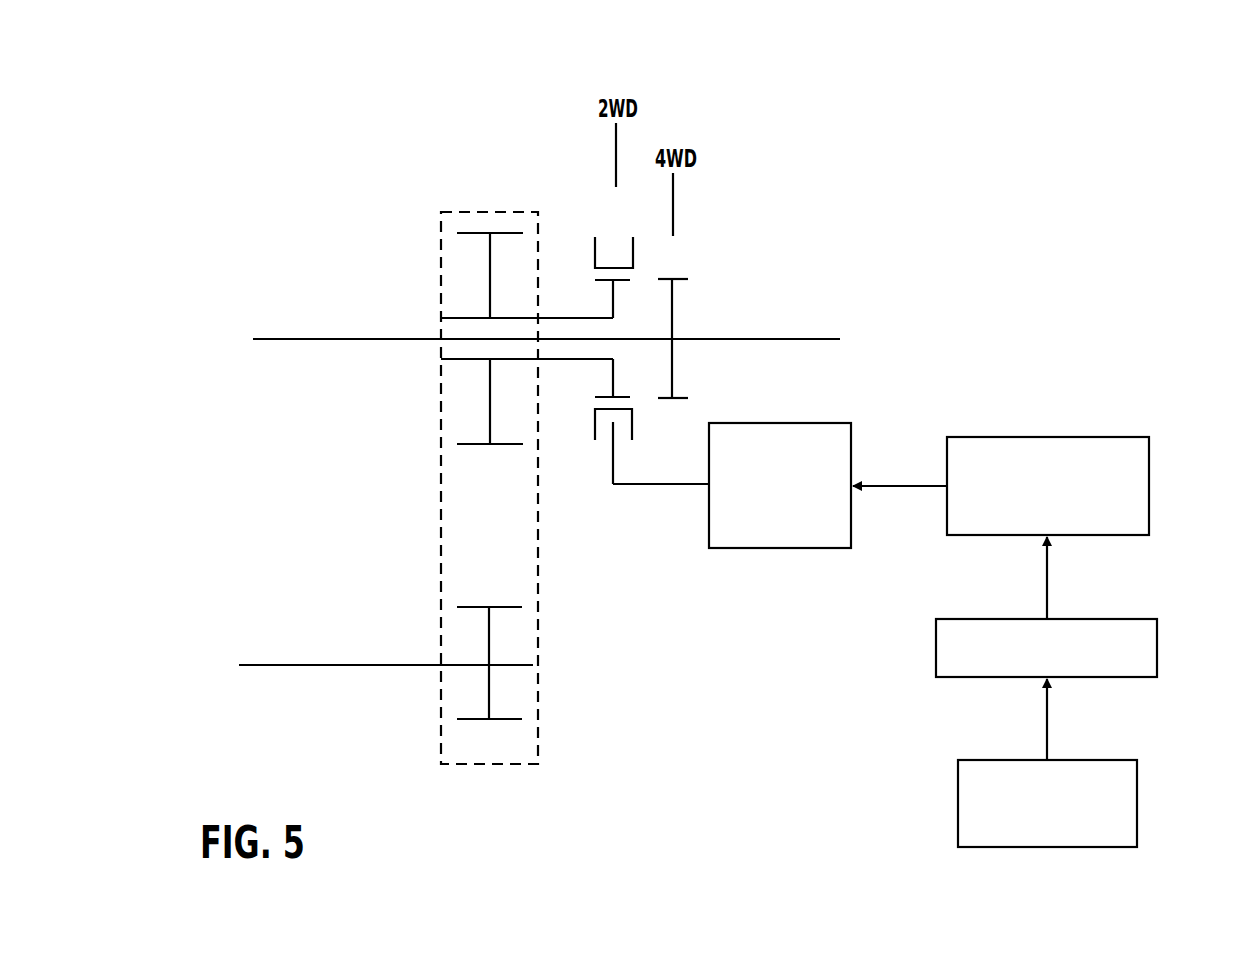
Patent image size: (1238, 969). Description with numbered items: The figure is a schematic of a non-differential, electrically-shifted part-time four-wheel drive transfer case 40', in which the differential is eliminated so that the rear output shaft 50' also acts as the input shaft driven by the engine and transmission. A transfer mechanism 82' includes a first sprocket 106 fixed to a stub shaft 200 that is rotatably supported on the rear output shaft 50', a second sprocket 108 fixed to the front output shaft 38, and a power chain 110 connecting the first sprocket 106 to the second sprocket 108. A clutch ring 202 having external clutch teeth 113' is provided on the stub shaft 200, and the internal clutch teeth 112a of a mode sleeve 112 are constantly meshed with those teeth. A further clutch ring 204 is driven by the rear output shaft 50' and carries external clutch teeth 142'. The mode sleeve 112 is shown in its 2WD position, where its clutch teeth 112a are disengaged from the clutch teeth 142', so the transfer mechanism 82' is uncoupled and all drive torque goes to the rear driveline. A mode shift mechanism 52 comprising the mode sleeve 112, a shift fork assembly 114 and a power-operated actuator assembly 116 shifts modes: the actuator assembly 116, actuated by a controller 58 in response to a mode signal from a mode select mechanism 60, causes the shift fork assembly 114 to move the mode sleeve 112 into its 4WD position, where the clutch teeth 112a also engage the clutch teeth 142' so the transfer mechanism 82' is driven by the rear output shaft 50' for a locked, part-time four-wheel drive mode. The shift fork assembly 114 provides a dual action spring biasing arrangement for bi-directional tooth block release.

The transfer case 40' is at (761, 48).
The power chain 110 is at (455, 548).
The first sprocket 106 is at (468, 232).
The stub shaft 200 is at (460, 317).
The clutch ring 202 is at (613, 296).
The external clutch teeth 113' is at (596, 295).
The mode sleeve 112 is at (594, 251).
The internal clutch teeth 112a is at (602, 401).
The clutch ring 204 is at (677, 308).
The external clutch teeth 142' is at (704, 259).
The rear output shaft 50' is at (546, 301).
The front output shaft 38 is at (291, 663).
The second sprocket 108 is at (465, 722).
The transfer mechanism 82' is at (608, 695).
The shift fork assembly 114 is at (803, 545).
The mode shift mechanism 52 is at (896, 446).
The actuator assembly 116 is at (1130, 521).
The controller 58 is at (1143, 650).
The mode select mechanism 60 is at (1122, 808).